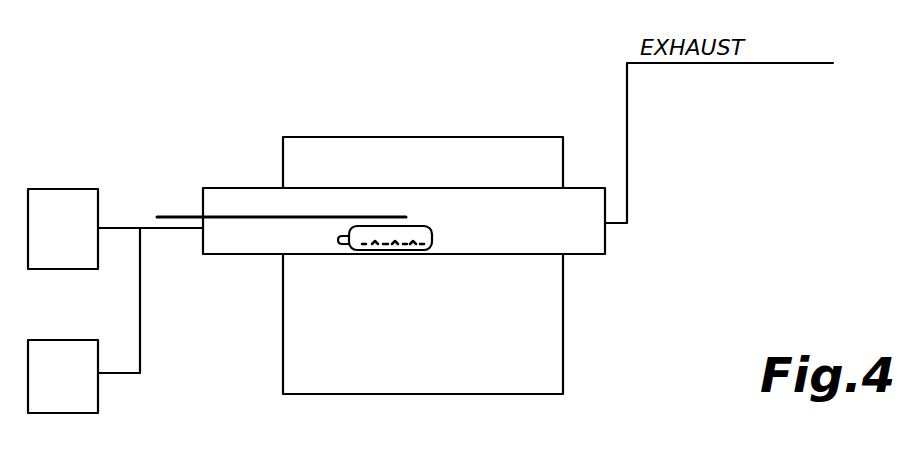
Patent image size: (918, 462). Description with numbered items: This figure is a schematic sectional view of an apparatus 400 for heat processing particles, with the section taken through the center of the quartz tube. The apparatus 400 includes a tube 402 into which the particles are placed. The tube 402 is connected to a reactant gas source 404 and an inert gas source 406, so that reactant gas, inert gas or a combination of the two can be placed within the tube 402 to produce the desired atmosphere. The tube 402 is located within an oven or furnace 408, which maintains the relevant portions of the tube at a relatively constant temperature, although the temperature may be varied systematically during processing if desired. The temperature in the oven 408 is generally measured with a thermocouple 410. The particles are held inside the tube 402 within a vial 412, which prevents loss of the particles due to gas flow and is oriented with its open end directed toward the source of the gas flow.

The apparatus 400 is at (472, 84).
The tube 402 is at (590, 256).
The reactant gas source 404 is at (78, 403).
The inert gas source 406 is at (62, 189).
The oven 408 is at (543, 353).
The thermocouple 410 is at (172, 215).
The vial 412 is at (431, 226).